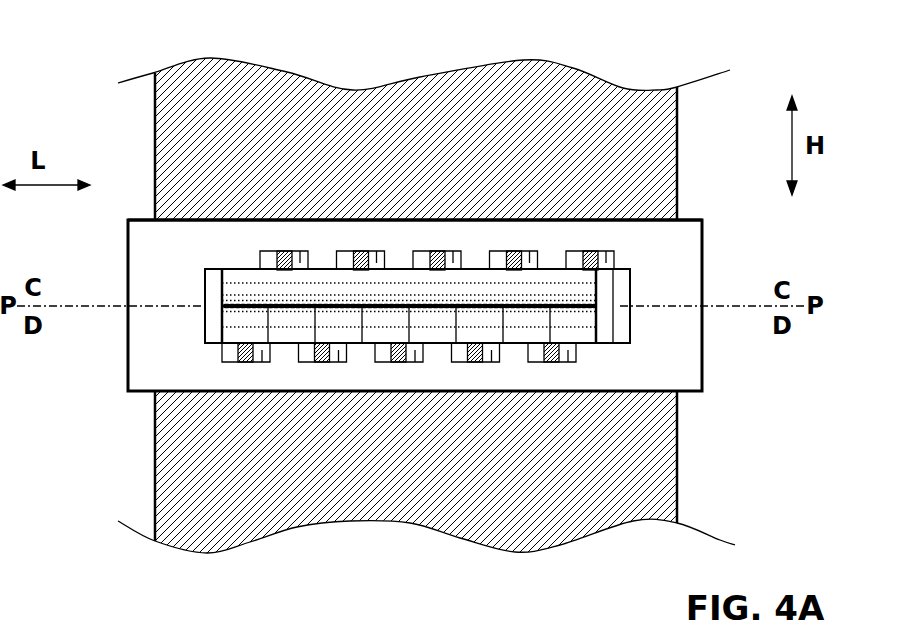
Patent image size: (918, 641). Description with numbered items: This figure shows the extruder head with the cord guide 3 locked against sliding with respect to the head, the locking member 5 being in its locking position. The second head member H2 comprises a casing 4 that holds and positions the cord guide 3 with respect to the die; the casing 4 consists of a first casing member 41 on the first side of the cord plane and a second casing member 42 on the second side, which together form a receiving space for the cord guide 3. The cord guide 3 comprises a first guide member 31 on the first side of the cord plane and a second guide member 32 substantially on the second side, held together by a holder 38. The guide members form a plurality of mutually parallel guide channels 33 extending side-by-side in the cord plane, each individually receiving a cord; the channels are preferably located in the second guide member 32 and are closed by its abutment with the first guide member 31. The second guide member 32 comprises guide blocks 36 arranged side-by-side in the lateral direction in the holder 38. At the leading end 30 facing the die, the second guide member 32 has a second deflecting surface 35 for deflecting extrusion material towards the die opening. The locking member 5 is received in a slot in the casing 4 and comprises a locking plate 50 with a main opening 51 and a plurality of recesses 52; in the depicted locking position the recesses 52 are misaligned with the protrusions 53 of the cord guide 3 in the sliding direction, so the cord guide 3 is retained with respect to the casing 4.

The cord guide 3 is at (243, 268).
The casing 4 is at (153, 138).
The locking member 5 is at (690, 273).
The leading end 30 is at (475, 306).
The first guide member 31 is at (402, 280).
The second guide member 32 is at (391, 320).
The guide channels 33 is at (590, 305).
The second deflecting surface 35 is at (265, 280).
The guide blocks 36 is at (563, 360).
The holder 38 is at (203, 320).
The first casing member 41 is at (663, 178).
The second casing member 42 is at (650, 462).
The locking plate 50 is at (695, 232).
The main opening 51 is at (205, 292).
The recesses 52 is at (300, 263).
The protrusions 53 is at (280, 252).
The second head member H2 is at (168, 463).